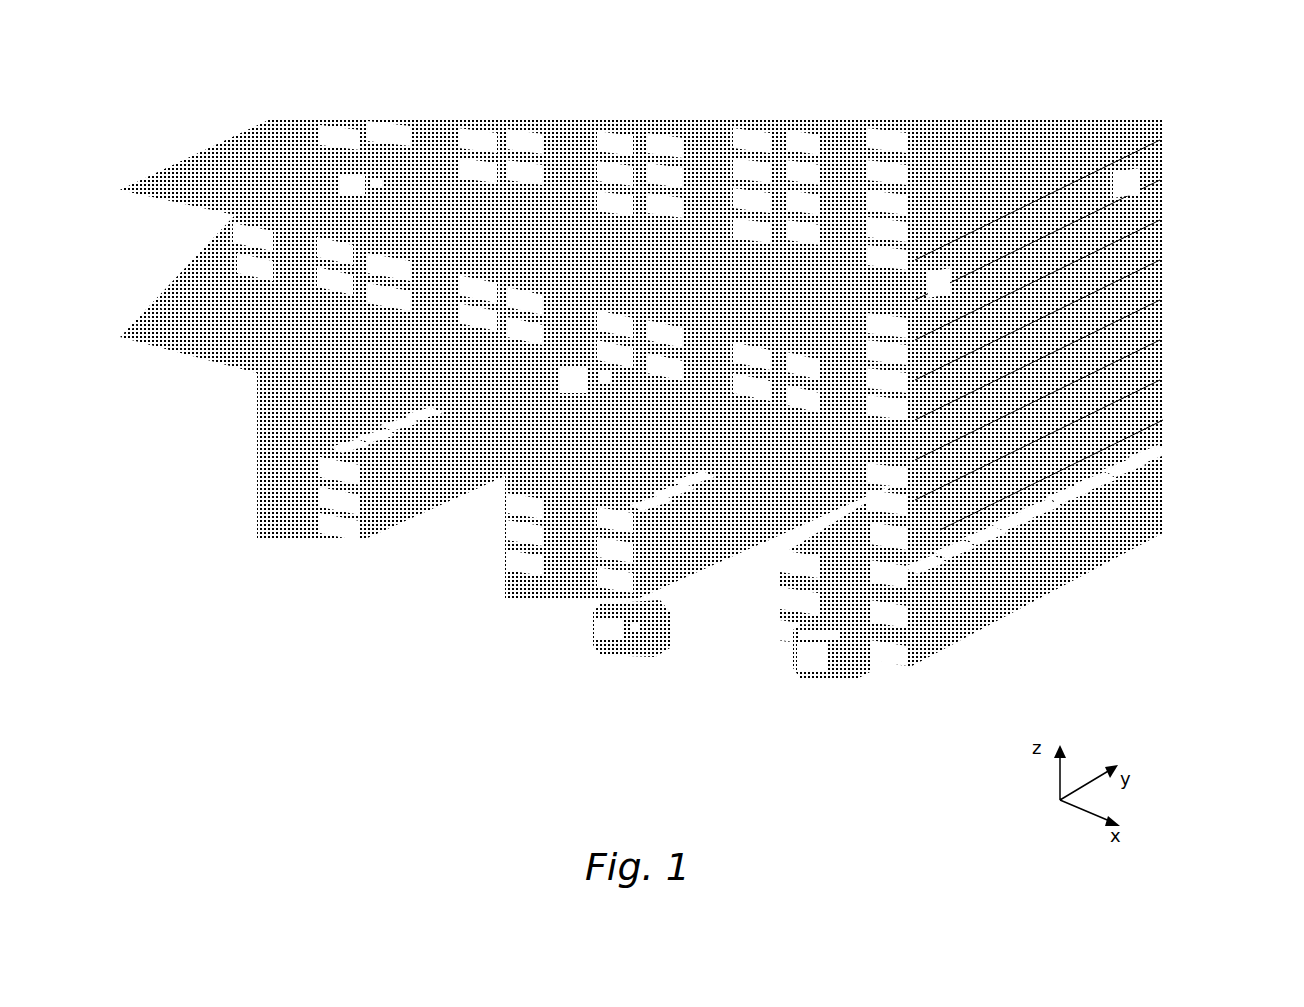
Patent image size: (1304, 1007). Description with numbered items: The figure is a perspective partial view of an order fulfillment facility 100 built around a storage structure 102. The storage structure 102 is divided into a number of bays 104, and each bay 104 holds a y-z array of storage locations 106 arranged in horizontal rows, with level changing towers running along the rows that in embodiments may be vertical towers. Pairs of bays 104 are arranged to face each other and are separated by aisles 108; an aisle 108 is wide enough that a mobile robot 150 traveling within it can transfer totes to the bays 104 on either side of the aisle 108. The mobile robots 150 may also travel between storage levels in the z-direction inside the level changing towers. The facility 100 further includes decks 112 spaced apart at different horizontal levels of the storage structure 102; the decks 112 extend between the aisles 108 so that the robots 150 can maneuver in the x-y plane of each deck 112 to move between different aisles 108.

The order fulfillment facility 100 is at (979, 29).
The storage structure 102 is at (1163, 252).
The bay 104 is at (530, 152).
The storage location 106 is at (716, 142).
The aisle 108 is at (438, 292).
The deck 112 is at (302, 194).
The mobile robot 150 is at (352, 182).